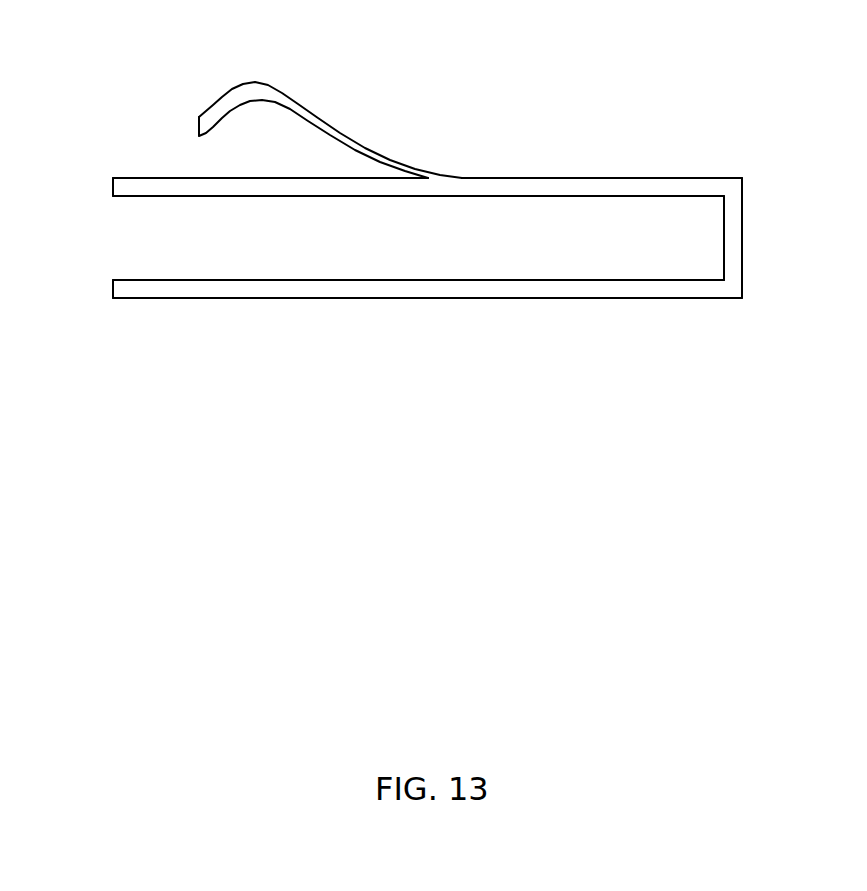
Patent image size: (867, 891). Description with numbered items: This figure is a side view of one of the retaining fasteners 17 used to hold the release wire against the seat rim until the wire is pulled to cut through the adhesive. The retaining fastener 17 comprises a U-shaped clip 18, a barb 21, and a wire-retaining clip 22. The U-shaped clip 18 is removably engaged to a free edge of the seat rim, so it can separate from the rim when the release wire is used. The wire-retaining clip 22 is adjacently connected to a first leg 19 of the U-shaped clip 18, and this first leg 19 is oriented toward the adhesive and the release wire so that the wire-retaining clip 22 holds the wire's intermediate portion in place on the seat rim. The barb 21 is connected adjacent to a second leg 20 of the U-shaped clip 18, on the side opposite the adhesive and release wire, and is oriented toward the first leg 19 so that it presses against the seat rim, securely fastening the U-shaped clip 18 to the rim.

The retaining fastener 17 is at (427, 170).
The U-shaped clip 18 is at (444, 197).
The first leg 19 is at (555, 187).
The second leg 20 is at (121, 289).
The barb 21 is at (405, 279).
The wire-retaining clip 22 is at (265, 92).